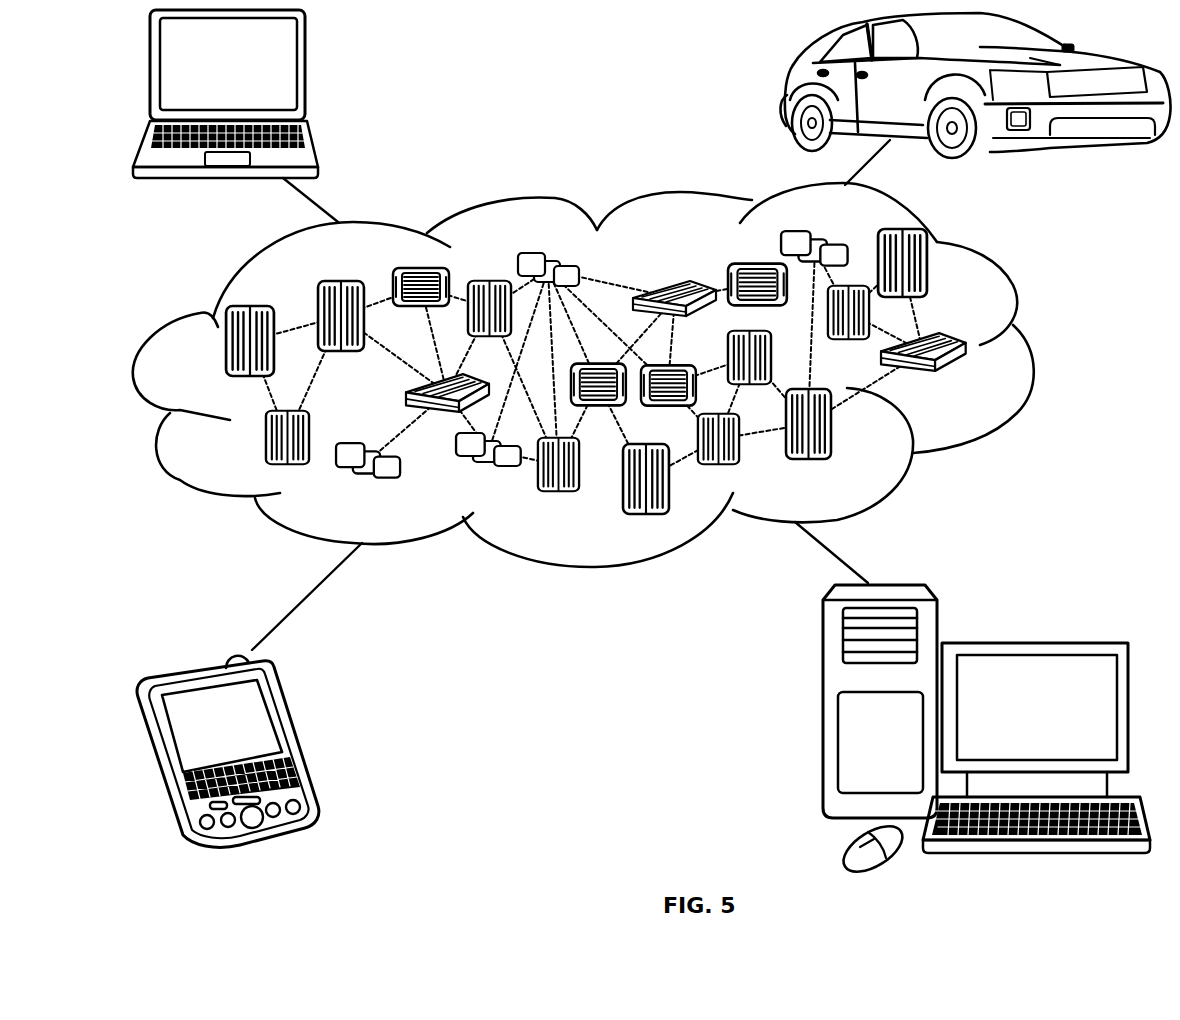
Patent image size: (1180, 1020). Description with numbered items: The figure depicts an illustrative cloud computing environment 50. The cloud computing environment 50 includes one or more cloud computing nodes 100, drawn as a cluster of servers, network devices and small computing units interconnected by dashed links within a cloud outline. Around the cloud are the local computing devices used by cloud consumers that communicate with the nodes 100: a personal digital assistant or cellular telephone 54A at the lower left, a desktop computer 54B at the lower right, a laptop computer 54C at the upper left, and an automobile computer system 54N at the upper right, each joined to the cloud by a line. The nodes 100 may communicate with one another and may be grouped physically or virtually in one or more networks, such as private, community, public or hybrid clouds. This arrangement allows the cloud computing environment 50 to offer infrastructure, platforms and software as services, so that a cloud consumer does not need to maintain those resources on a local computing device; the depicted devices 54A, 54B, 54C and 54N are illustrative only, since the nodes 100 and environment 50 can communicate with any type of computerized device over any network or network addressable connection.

The cloud computing environment 50 is at (1035, 350).
The cloud computing nodes 100 is at (966, 379).
The personal digital assistant or cellular telephone 54A is at (290, 738).
The desktop computer 54B is at (1032, 643).
The laptop computer 54C is at (305, 72).
The automobile computer system 54N is at (790, 92).